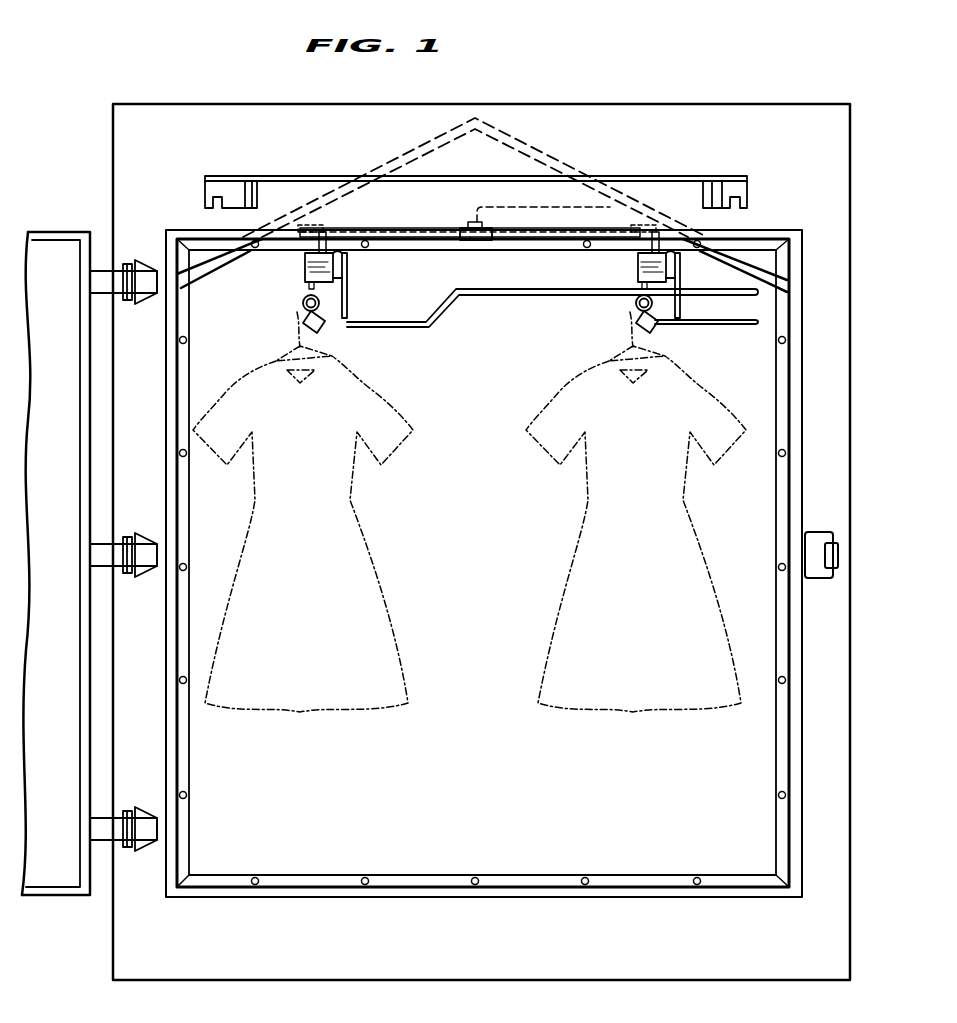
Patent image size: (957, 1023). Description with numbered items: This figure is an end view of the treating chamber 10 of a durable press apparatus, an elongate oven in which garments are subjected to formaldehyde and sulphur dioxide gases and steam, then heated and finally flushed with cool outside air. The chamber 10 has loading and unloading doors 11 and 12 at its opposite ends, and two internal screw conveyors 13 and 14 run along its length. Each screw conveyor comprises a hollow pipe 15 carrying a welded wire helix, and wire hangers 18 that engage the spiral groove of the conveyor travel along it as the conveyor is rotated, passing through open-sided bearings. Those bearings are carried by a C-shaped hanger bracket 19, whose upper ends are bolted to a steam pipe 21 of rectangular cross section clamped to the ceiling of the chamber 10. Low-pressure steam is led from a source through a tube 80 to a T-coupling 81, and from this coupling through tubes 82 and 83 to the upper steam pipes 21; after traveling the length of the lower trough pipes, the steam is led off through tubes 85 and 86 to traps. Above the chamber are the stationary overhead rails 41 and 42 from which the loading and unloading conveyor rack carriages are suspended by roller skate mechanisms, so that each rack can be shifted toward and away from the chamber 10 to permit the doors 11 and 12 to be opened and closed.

The treating chamber 10 is at (138, 921).
The loading door 11 is at (58, 506).
The unloading door 12 is at (480, 601).
The screw conveyor 13 is at (330, 330).
The screw conveyor 14 is at (622, 318).
The hollow pipe 15 is at (302, 303).
The wire hanger 18 is at (297, 332).
The C-shaped hanger bracket 19 is at (347, 295).
The steam pipe 21 is at (300, 242).
The overhead rail 41 is at (205, 192).
The overhead rail 42 is at (747, 197).
The tube 80 is at (476, 208).
The T-coupling 81 is at (480, 240).
The tube 82 is at (404, 237).
The tube 83 is at (548, 237).
The tube 85 is at (712, 324).
The tube 86 is at (512, 290).